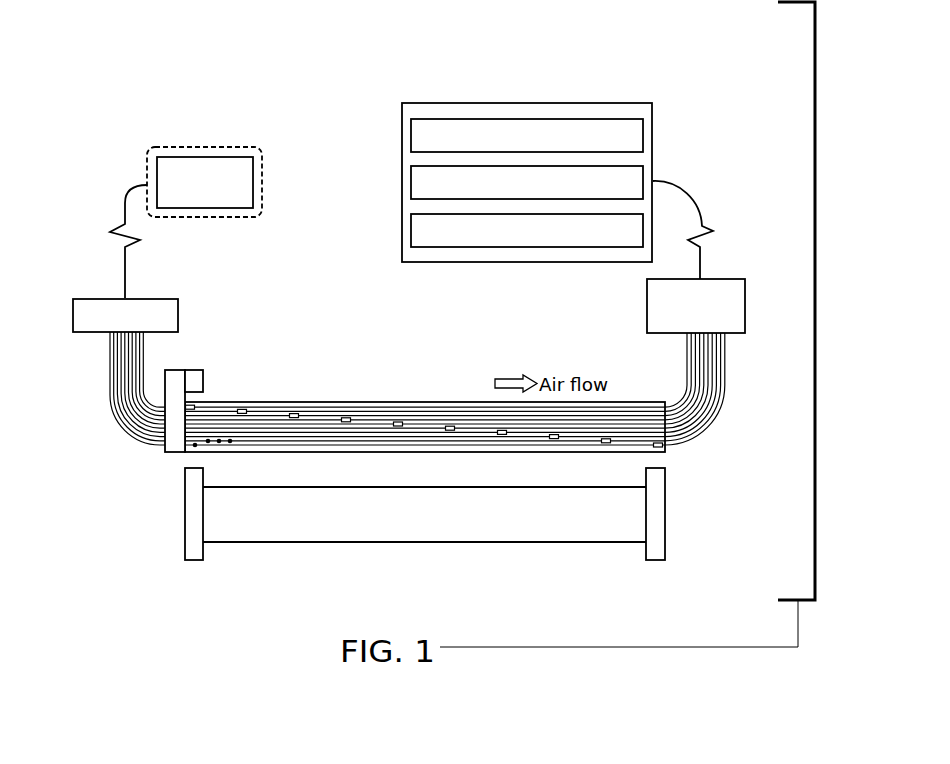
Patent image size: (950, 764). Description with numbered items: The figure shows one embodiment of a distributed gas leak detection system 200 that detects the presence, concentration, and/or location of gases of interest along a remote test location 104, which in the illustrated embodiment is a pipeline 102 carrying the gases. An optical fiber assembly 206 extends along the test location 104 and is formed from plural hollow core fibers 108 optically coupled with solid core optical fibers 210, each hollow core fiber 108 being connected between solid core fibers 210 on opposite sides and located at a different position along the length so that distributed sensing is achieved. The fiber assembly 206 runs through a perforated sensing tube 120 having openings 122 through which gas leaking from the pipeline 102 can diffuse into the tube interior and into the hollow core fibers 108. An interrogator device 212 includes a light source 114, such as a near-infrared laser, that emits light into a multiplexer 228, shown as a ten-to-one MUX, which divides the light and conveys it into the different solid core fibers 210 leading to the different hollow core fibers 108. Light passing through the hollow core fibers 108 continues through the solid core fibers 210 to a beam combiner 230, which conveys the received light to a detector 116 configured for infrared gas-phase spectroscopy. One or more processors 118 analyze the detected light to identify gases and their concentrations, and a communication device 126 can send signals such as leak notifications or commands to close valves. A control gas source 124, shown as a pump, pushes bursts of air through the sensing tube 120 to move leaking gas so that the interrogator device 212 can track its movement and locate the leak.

The pipeline 102 is at (520, 543).
The remote test location 104 is at (675, 463).
The hollow core fibers (HCFs) 108 is at (396, 408).
The light source 114 is at (150, 165).
The detector 116 is at (411, 232).
The processors 118 is at (411, 185).
The perforated sensing tube 120 is at (289, 393).
The openings 122 is at (211, 450).
The control gas source 124 is at (165, 453).
The communication device 126 is at (411, 137).
The distributed gas leak detection system 200 is at (748, 28).
The optical fiber assembly 206 is at (63, 318).
The solid core optical fibers 210 is at (322, 445).
The interrogator device 212 is at (680, 58).
The multiplexer 228 is at (178, 315).
The beam combiner 230 is at (647, 309).